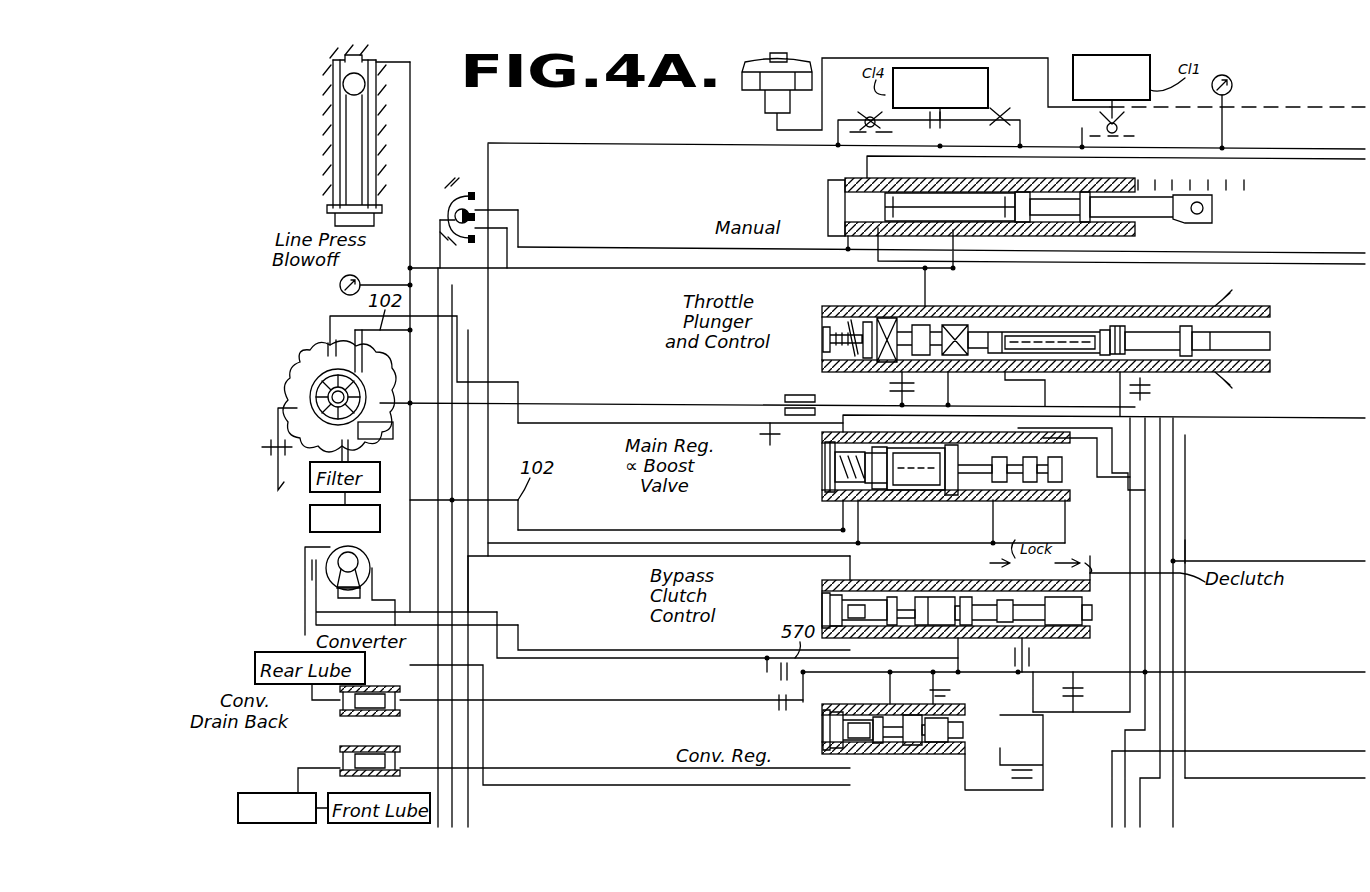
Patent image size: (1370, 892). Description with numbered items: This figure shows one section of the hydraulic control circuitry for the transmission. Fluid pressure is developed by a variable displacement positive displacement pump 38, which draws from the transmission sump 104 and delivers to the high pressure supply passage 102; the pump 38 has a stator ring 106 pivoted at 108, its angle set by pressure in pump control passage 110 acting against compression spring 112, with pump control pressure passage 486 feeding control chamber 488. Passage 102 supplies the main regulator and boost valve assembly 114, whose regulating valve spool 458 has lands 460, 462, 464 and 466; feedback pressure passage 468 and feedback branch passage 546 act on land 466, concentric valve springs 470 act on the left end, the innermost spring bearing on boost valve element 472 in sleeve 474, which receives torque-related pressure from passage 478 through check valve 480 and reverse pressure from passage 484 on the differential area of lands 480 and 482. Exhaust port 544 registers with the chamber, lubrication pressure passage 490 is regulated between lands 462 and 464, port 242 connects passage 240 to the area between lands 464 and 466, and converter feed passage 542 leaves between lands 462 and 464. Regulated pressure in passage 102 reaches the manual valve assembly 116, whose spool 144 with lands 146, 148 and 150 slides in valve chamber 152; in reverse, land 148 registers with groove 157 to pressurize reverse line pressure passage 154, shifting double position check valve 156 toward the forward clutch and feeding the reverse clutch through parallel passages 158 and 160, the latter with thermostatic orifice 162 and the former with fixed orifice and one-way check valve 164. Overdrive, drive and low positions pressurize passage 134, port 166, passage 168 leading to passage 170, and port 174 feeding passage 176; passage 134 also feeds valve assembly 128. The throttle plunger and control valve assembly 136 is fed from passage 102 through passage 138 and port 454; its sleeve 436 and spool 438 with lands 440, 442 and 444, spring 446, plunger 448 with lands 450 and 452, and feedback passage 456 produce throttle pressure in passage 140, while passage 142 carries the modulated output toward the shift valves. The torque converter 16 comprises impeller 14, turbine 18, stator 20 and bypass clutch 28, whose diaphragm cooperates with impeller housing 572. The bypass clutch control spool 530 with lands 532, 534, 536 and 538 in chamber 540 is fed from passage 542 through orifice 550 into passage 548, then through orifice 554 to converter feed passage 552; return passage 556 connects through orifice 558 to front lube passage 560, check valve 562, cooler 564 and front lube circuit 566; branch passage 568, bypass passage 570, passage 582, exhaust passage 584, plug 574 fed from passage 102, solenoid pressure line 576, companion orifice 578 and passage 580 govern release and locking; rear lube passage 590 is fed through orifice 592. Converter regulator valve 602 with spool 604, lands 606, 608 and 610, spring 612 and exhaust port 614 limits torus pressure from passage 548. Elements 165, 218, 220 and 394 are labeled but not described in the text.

The impeller 14 is at (372, 565).
The hydrokinetic torque converter 16 is at (380, 546).
The bladed turbine 18 is at (310, 553).
The bladed stator 20 is at (362, 578).
The converter bypass clutch 28 is at (300, 574).
The positive displacement pump 38 is at (290, 364).
The high pressure supply passage 102 is at (560, 247).
The transmission sump 104 is at (310, 516).
The stator ring 106 is at (380, 408).
The pivot 108 is at (330, 338).
The pump control passage 110 is at (457, 323).
The compression spring 112 is at (393, 430).
The main regulator and boost valve assembly 114 is at (925, 500).
The manual valve assembly 116 is at (925, 232).
The valve assembly 128 is at (878, 585).
The line pressure passage 134 is at (1290, 263).
The throttle plunger and control valve assembly 136 is at (900, 310).
The passage 138 is at (925, 300).
The throttle valve pressure passage 140 is at (1005, 406).
The passage 142 is at (1173, 608).
The multiple land valve spool 144 is at (995, 190).
The valve land 146 is at (897, 187).
The valve land 148 is at (1015, 230).
The valve land 150 is at (1095, 207).
The valve chamber 152 is at (930, 190).
The reverse line pressure passage 154 is at (1080, 166).
The double position check valve 156 is at (1125, 122).
The axially elongated valve groove 157 is at (1040, 190).
The passage 158 is at (1010, 146).
The passage 160 is at (992, 110).
The orifice 162 is at (1000, 115).
The one-way check valve 164 is at (865, 115).
The orifice 165 is at (929, 129).
The passage 166 is at (845, 184).
The passage 168 is at (858, 166).
The passage 170 is at (1258, 148).
The port 174 is at (832, 210).
The passage 176 is at (848, 250).
The converter feed passage 218 is at (1272, 778).
The throttle plunger exhaust 220 is at (1072, 372).
The passage 240 is at (1312, 672).
The port 242 is at (1065, 480).
The lube passage 394 is at (1262, 751).
The valve sleeve 436 is at (935, 380).
The throttle valve spool 438 is at (958, 372).
The valve land 440 is at (872, 362).
The valve land 442 is at (935, 318).
The valve land 444 is at (995, 328).
The valve spring 446 is at (1080, 306).
The throttle valve plunger 448 is at (1220, 340).
The valve land 450 is at (1135, 306).
The valve land 452 is at (1190, 306).
The port 454 is at (985, 306).
The throttle valve feedback passage 456 is at (902, 390).
The regulating valve spool 458 is at (975, 452).
The valve land 460 is at (950, 500).
The valve land 462 is at (1000, 490).
The valve land 464 is at (1030, 490).
The valve land 466 is at (1062, 490).
The feedback pressure passage 468 is at (993, 548).
The concentric valve springs 470 is at (900, 500).
The boost valve element 472 is at (850, 472).
The sleeve 474 is at (835, 457).
The passage 478 is at (1222, 418).
The valve land 480 is at (840, 483).
The valve land 482 is at (843, 500).
The reverse line pressure passage 484 is at (492, 460).
The pump control pressure passage 486 is at (556, 423).
The control chamber 488 is at (290, 380).
The lubrication pressure passage 490 is at (1160, 482).
The multiple land valve spool 530 is at (985, 600).
The valve land 532 is at (900, 632).
The valve land 534 is at (958, 674).
The valve land 536 is at (980, 638).
The valve land 538 is at (1082, 614).
The valve chamber 540 is at (1035, 600).
The passage 542 is at (1130, 705).
The exhaust port 544 is at (920, 543).
The feedback branch passage 546 is at (1065, 542).
The passage 548 is at (1060, 697).
The orifice 550 is at (1073, 712).
The feed passage 552 is at (490, 612).
The orifice 554 is at (768, 677).
The converter flow return passage 556 is at (532, 785).
The flow control orifice 558 is at (1043, 792).
The front lubrication circuit passage 560 is at (540, 757).
The lube pressure check valve 562 is at (386, 750).
The transmission cooler 564 is at (250, 793).
The front lube circuit 566 is at (340, 768).
The branch passage 568 is at (935, 611).
The converter bypass flow passage 570 is at (316, 592).
The impeller housing 572 is at (316, 617).
The valve plug 574 is at (850, 612).
The solenoid pressure line 576 is at (530, 565).
The companion orifice 578 is at (1030, 670).
The passage 580 is at (1000, 748).
The passage 582 is at (820, 682).
The exhaust passage 584 is at (905, 577).
The rear lube passage 590 is at (550, 702).
The orifice 592 is at (768, 714).
The converter regulator valve 602 is at (870, 752).
The regulator valve spool 604 is at (895, 752).
The valve land 606 is at (872, 704).
The valve land 608 is at (925, 685).
The valve land 610 is at (965, 722).
The valve spring 612 is at (848, 752).
The exhaust port 614 is at (955, 752).